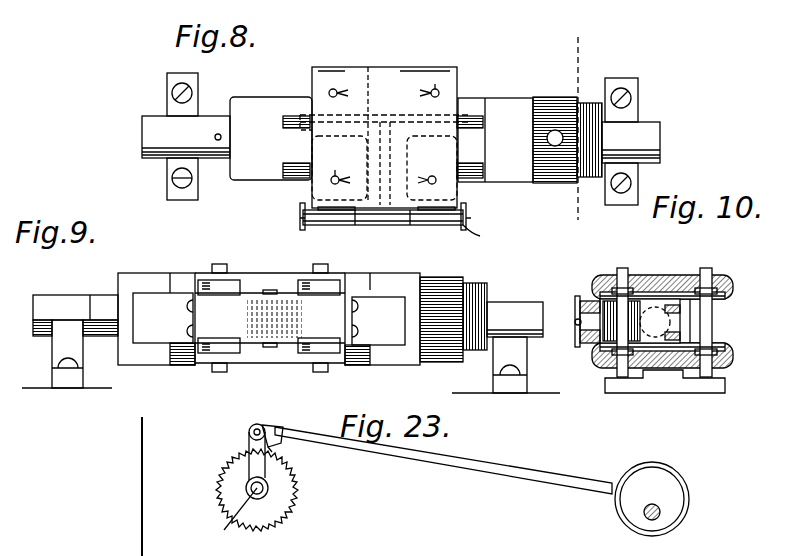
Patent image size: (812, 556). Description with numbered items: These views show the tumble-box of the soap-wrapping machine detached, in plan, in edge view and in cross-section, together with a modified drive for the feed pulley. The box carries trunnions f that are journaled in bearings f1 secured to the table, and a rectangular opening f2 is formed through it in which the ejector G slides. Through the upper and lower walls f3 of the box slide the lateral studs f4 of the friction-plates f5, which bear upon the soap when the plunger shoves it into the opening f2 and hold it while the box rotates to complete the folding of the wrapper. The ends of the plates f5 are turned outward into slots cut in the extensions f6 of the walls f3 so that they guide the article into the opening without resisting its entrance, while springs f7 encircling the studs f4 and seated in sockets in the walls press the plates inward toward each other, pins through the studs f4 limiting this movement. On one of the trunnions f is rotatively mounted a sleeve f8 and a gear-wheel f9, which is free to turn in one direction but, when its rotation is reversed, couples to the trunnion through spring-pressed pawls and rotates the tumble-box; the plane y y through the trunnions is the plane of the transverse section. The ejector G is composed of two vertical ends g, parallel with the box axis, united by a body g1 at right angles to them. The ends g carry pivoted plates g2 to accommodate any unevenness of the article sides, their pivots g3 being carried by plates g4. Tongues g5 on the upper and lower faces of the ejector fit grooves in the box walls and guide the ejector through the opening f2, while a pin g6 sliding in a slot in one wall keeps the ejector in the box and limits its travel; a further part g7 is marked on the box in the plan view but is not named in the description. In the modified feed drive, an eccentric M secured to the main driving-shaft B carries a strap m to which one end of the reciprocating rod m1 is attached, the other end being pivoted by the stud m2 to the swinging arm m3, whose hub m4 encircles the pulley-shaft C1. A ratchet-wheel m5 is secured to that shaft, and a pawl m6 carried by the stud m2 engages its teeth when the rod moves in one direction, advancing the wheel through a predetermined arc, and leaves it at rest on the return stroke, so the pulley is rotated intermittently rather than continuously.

In FIG. 8, the trunnions f is at (210, 110).
In FIG. 8, the bearings f1 is at (160, 116).
In FIG. 9, the rectangular opening f2 is at (163, 318).
In FIG. 9, the upper and lower walls f3 is at (140, 277).
In FIG. 10, the upper and lower walls f3 is at (652, 278).
In FIG. 8, the lateral studs f4 is at (440, 90).
In FIG. 9, the lateral studs f4 is at (224, 258).
In FIG. 10, the lateral studs f4 is at (620, 270).
In FIG. 9, the friction-plates f5 is at (222, 295).
In FIG. 10, the friction-plates f5 is at (733, 296).
In FIG. 8, the extensions of the walls f6 is at (462, 90).
In FIG. 9, the extensions of the walls f6 is at (190, 364).
In FIG. 10, the springs f7 is at (716, 280).
In FIG. 8, the sleeve f8 is at (545, 97).
In FIG. 8, the gear-wheel f9 is at (588, 103).
In FIG. 8, the vertical ends g is at (422, 218).
In FIG. 10, the vertical ends g is at (580, 304).
In FIG. 8, the body g1 is at (432, 168).
In FIG. 10, the body g1 is at (621, 321).
In FIG. 8, the pivoted plates g2 is at (472, 239).
In FIG. 9, the pivoted plates g2 is at (274, 319).
In FIG. 10, the pivoted plates g2 is at (574, 328).
In FIG. 8, the pivots g3 is at (478, 222).
In FIG. 10, the pivots g3 is at (567, 362).
In FIG. 8, the plates g4 is at (300, 216).
In FIG. 8, the tongues g5 is at (382, 225).
In FIG. 9, the tongues g5 is at (268, 347).
In FIG. 8, the pin g6 is at (370, 176).
In FIG. 8, the cover plate g7 is at (370, 78).
In FIG. 8, the ejector G is at (405, 225).
In FIG. 9, the ejector G is at (270, 318).
In FIG. 10, the ejector G is at (665, 300).
In FIG. 8, the section plane y y is at (573, 126).
In FIG. 23, the strap m is at (645, 464).
In FIG. 23, the reciprocating rod m1 is at (490, 471).
In FIG. 23, the stud m2 is at (249, 433).
In FIG. 23, the swinging arm m3 is at (250, 468).
In FIG. 23, the hub m4 is at (237, 519).
In FIG. 23, the ratchet-wheel m5 is at (292, 508).
In FIG. 23, the pawl m6 is at (280, 446).
In FIG. 23, the eccentric M is at (672, 496).
In FIG. 23, the main driving-shaft B is at (658, 516).
In FIG. 23, the pulley-shaft C1 is at (268, 488).